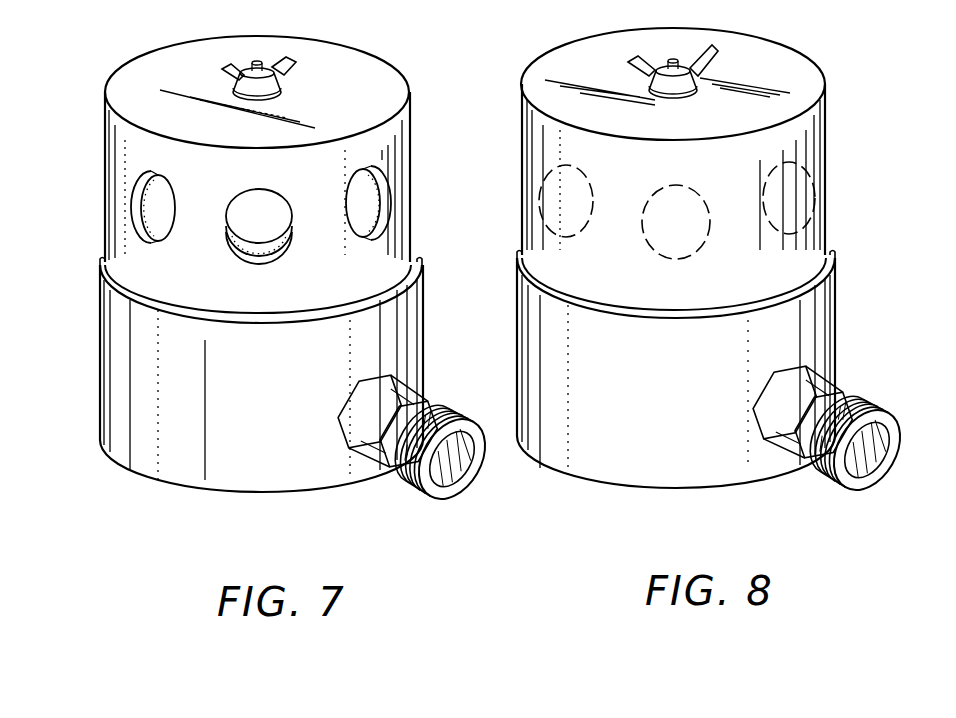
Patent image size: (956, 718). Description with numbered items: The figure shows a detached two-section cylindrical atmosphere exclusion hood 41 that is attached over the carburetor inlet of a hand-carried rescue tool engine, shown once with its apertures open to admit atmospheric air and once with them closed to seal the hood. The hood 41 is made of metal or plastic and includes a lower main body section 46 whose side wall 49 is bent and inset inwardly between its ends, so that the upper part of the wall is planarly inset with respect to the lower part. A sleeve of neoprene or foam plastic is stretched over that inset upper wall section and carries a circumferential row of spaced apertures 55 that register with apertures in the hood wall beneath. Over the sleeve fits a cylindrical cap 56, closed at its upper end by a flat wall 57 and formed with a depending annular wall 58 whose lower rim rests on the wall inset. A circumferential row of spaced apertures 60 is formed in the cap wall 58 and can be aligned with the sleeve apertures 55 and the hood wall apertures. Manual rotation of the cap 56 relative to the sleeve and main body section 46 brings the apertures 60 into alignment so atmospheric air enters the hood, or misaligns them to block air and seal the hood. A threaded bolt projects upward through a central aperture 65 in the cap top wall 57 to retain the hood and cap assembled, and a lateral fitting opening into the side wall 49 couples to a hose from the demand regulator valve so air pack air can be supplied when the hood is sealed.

In FIG. 7, the cylindrical hood 41 is at (92, 263).
In FIG. 7, the main body section 46 is at (100, 362).
In FIG. 8, the main body section 46 is at (835, 298).
In FIG. 7, the side wall 49 is at (183, 455).
In FIG. 8, the side wall 49 is at (608, 457).
In FIG. 8, the apertures 55 is at (777, 147).
In FIG. 7, the cylindrical cap 56 is at (97, 132).
In FIG. 8, the cylindrical cap 56 is at (848, 115).
In FIG. 7, the flat wall 57 is at (368, 63).
In FIG. 8, the flat wall 57 is at (775, 52).
In FIG. 7, the annular wall 58 is at (398, 134).
In FIG. 8, the annular wall 58 is at (523, 147).
In FIG. 7, the apertures 60 is at (233, 218).
In FIG. 7, the central aperture 65 is at (422, 387).
In FIG. 8, the central aperture 65 is at (838, 388).